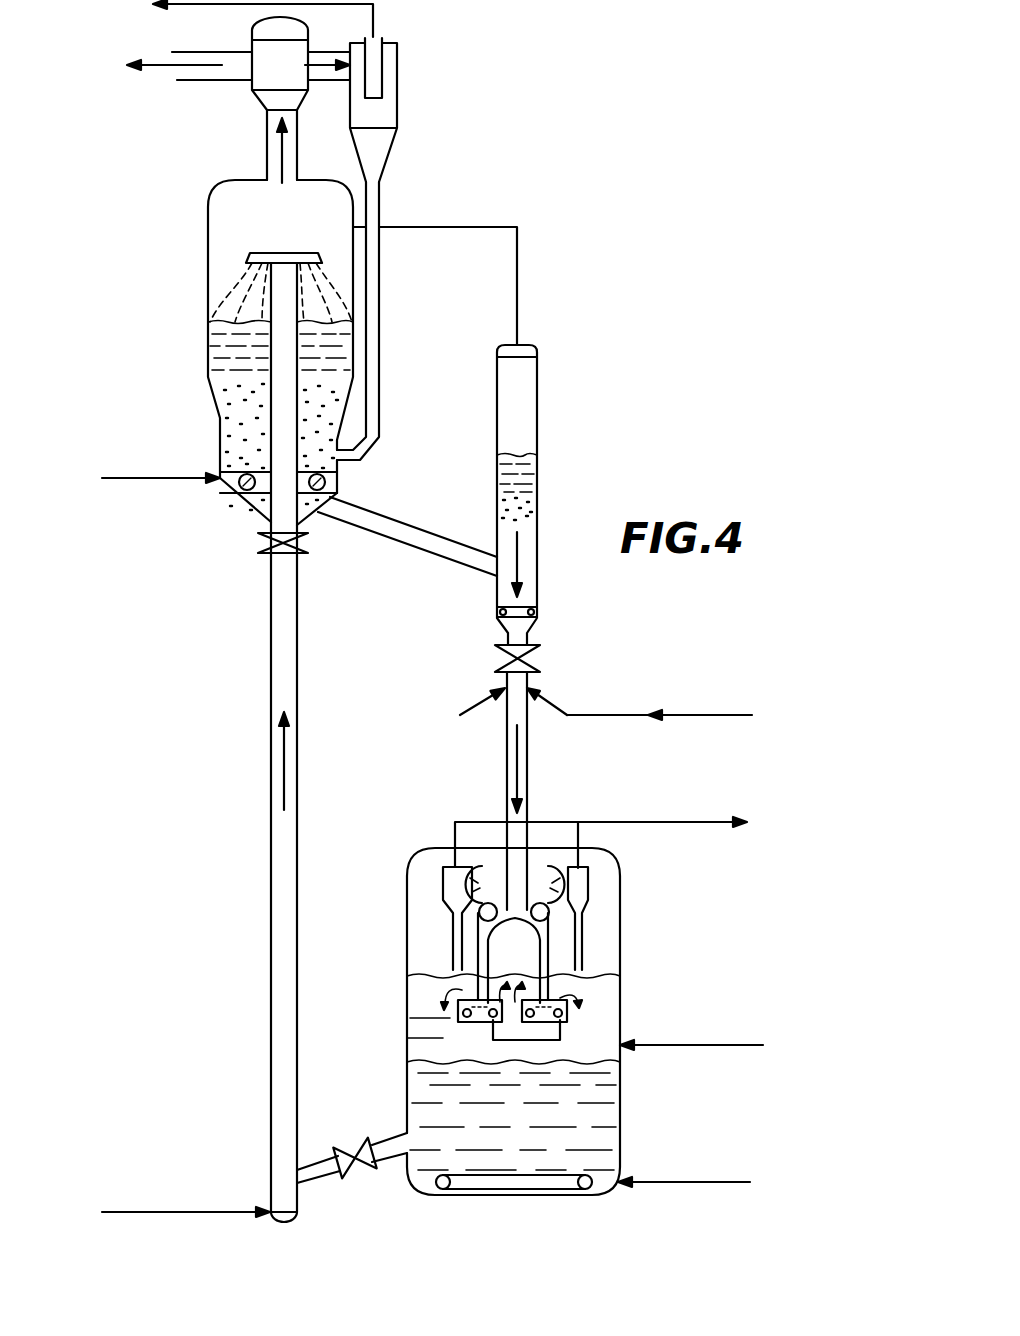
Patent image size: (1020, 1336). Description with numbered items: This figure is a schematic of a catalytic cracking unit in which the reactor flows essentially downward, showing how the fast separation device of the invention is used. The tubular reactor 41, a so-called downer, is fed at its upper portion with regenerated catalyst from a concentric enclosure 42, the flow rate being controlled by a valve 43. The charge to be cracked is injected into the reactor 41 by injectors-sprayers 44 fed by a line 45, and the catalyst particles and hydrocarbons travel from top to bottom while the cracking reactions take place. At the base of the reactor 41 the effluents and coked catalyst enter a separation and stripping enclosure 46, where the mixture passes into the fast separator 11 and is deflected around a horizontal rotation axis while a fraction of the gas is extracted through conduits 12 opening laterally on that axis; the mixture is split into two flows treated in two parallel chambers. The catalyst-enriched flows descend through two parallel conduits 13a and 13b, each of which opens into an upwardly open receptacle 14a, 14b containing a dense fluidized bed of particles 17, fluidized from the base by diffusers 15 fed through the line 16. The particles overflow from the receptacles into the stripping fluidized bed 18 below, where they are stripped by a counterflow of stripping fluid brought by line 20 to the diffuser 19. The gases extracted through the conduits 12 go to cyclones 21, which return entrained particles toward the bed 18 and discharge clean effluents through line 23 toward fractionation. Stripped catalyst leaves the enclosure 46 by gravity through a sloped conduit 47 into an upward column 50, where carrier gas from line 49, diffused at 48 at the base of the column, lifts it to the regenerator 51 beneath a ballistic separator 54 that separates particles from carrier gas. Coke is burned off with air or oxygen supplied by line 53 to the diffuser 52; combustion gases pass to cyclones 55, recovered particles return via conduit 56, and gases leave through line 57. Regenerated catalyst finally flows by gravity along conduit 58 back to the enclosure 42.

The fast separator 11 is at (550, 930).
The conduits 12 is at (553, 897).
The conduit 13a is at (583, 975).
The conduit 13b is at (453, 978).
The receptacle 14a is at (567, 1008).
The receptacle 14b is at (457, 1015).
The diffusers 15 is at (522, 1015).
The line 16 is at (717, 1045).
The fluidized bed of particles 17 is at (490, 1022).
The stripping fluidized bed 18 is at (597, 1117).
The diffuser 19 is at (587, 1192).
The line 20 is at (713, 1183).
The cyclones 21 is at (580, 883).
The line 23 is at (630, 820).
The tubular reactor 41 is at (528, 762).
The enclosure 42 is at (540, 437).
The valve 43 is at (540, 662).
The injectors-sprayers 44 is at (558, 703).
The line 45 is at (697, 713).
The separation and stripping enclosure 46 is at (408, 923).
The sloped conduit 47 is at (392, 1152).
The carrier gas diffuser 48 is at (287, 1210).
The line 49 is at (182, 1172).
The upward column 50 is at (265, 979).
The regenerator 51 is at (207, 410).
The diffuser 52 is at (237, 495).
The line 53 is at (140, 480).
The ballistic separator 54 is at (283, 243).
The cyclones 55 is at (392, 157).
The conduit 56 is at (378, 288).
The line 57 is at (373, 20).
The conduit 58 is at (402, 530).